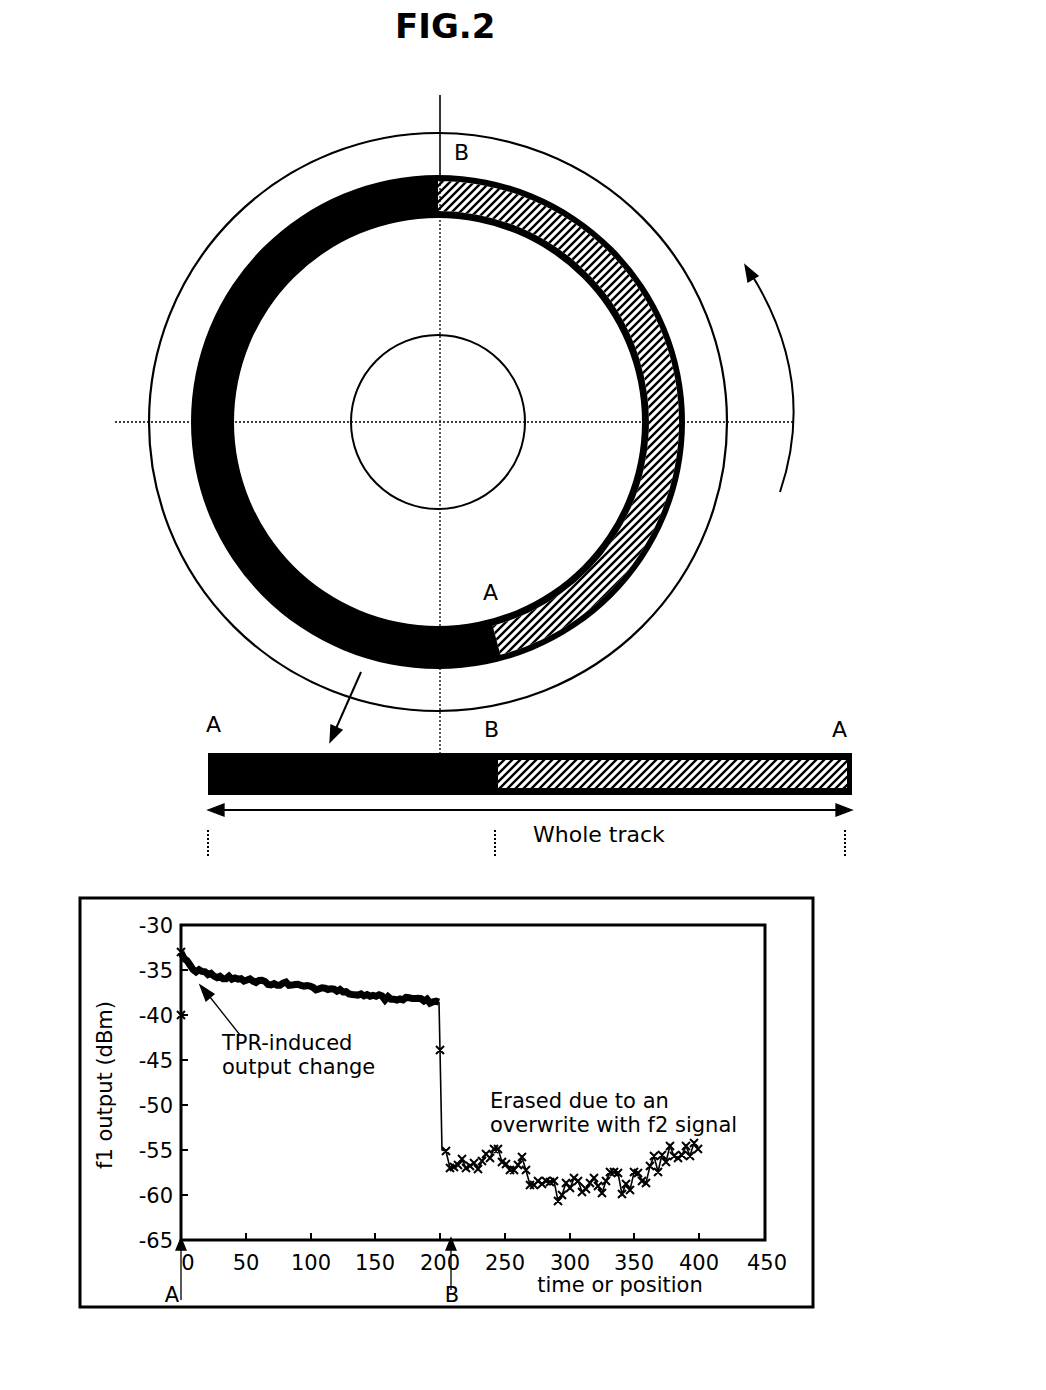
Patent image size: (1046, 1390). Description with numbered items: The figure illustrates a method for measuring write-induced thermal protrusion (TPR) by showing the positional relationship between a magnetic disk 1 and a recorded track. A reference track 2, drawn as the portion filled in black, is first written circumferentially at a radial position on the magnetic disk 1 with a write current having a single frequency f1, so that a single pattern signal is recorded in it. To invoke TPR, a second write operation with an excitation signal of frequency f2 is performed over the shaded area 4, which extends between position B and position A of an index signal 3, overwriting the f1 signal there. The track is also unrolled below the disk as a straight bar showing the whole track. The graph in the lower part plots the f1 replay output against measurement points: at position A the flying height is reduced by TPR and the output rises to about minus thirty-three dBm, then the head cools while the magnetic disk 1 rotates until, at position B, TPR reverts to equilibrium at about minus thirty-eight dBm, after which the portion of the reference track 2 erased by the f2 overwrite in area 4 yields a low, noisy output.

The magnetic disk 1 is at (625, 238).
The reference track 2 is at (248, 276).
The index signal 3 is at (449, 422).
The shaded area 4 is at (593, 238).